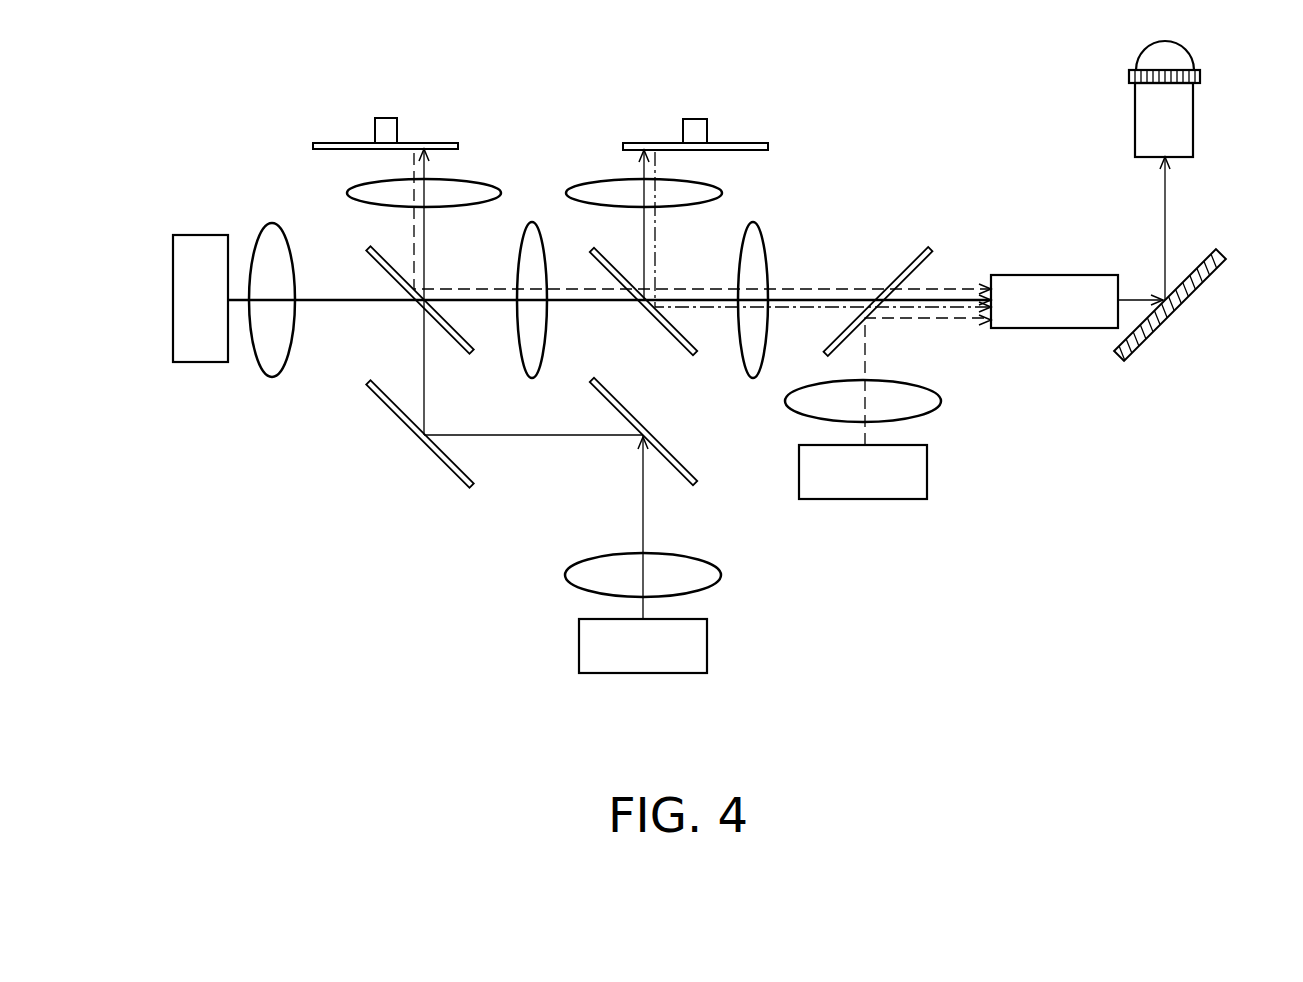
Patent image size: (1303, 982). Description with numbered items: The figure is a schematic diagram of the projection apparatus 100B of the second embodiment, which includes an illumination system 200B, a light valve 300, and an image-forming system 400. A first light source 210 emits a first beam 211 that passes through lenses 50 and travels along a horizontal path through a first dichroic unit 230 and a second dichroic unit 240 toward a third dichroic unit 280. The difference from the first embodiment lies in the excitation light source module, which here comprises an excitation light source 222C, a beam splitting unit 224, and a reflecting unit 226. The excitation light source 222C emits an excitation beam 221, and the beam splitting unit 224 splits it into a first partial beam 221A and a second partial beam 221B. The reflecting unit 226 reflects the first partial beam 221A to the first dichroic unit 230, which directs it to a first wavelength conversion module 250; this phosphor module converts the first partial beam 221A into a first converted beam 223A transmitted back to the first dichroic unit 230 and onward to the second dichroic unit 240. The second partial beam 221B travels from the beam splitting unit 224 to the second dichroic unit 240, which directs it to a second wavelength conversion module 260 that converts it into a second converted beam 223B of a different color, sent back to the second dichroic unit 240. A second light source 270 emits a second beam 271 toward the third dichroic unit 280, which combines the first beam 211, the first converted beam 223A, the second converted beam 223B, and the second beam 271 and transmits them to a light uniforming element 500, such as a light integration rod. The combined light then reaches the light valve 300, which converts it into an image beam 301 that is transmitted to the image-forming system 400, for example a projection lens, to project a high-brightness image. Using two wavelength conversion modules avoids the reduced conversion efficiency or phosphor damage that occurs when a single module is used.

The projection apparatus 100B is at (1300, 762).
The illumination system 200B is at (918, 173).
The first light source 210 is at (207, 248).
The lenses 50 is at (273, 233).
The first beam 211 is at (337, 305).
The first dichroic unit 230 is at (380, 270).
The second dichroic unit 240 is at (607, 275).
The first wavelength conversion module 250 is at (380, 130).
The second wavelength conversion module 260 is at (702, 132).
The first partial beam 221A is at (427, 172).
The second partial beam 221B is at (640, 172).
The first converted beam 223A is at (420, 163).
The second converted beam 223B is at (692, 247).
The excitation beam 221 is at (641, 521).
The excitation light source 222C is at (693, 645).
The beam splitting unit 224 is at (690, 462).
The reflecting unit 226 is at (460, 468).
The third dichroic unit 280 is at (905, 270).
The second light source 270 is at (915, 470).
The second beam 271 is at (866, 362).
The light uniforming element 500 is at (1073, 288).
The light valve 300 is at (1177, 307).
The image beam 301 is at (1167, 205).
The image-forming system 400 is at (1183, 140).